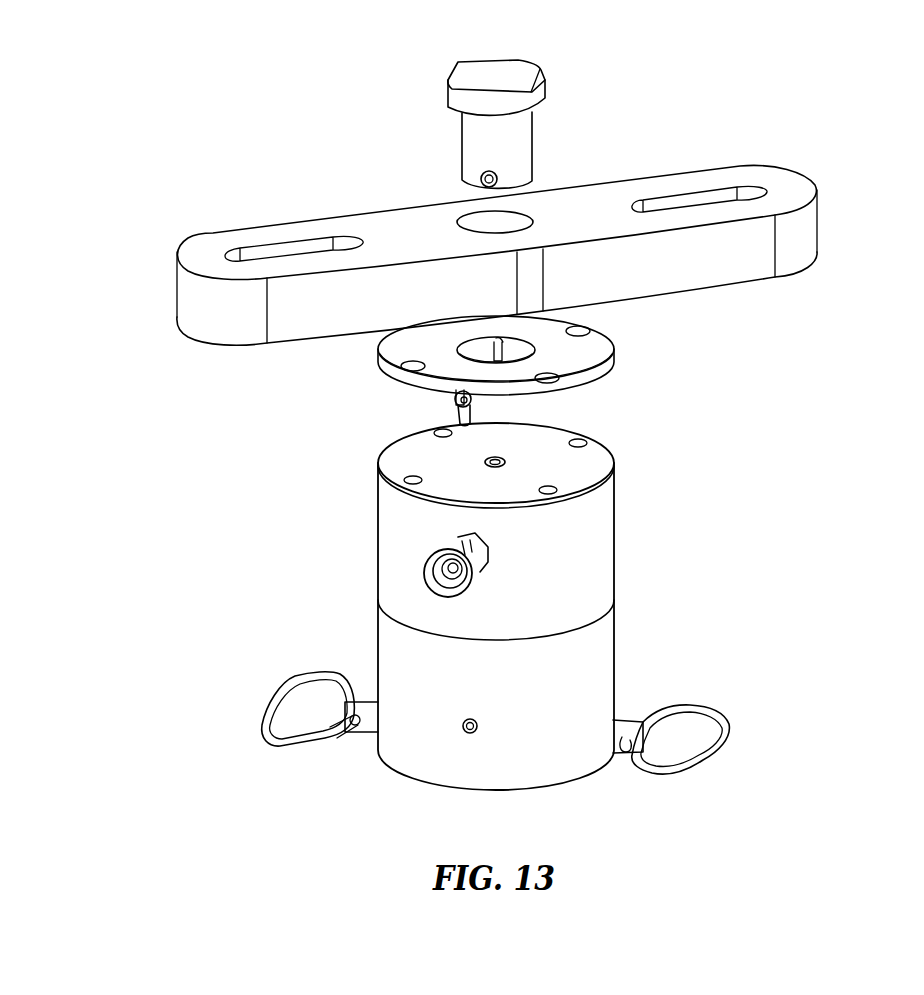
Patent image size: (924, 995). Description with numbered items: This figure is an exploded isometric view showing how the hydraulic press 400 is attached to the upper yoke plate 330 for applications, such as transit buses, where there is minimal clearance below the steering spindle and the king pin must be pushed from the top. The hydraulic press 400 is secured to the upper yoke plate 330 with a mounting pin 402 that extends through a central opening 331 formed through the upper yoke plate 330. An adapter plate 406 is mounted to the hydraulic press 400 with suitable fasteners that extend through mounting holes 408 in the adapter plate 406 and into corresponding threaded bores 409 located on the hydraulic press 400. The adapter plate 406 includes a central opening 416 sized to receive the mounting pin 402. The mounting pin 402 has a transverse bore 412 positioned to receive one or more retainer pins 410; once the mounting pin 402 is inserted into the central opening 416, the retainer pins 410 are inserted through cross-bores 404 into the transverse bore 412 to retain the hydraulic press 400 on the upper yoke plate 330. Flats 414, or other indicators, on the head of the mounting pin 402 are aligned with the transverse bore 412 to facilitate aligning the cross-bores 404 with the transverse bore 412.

The upper yoke plate 330 is at (788, 188).
The central opening 331 is at (490, 222).
The hydraulic press 400 is at (597, 585).
The mounting pin 402 is at (520, 61).
The cross-bores 404 is at (470, 395).
The adapter plate 406 is at (612, 355).
The mounting holes 408 is at (582, 331).
The threaded bores 409 is at (395, 487).
The retainer pins 410 is at (468, 396).
The transverse bore 412 is at (494, 175).
The flats 414 is at (535, 94).
The central opening 416 is at (458, 348).